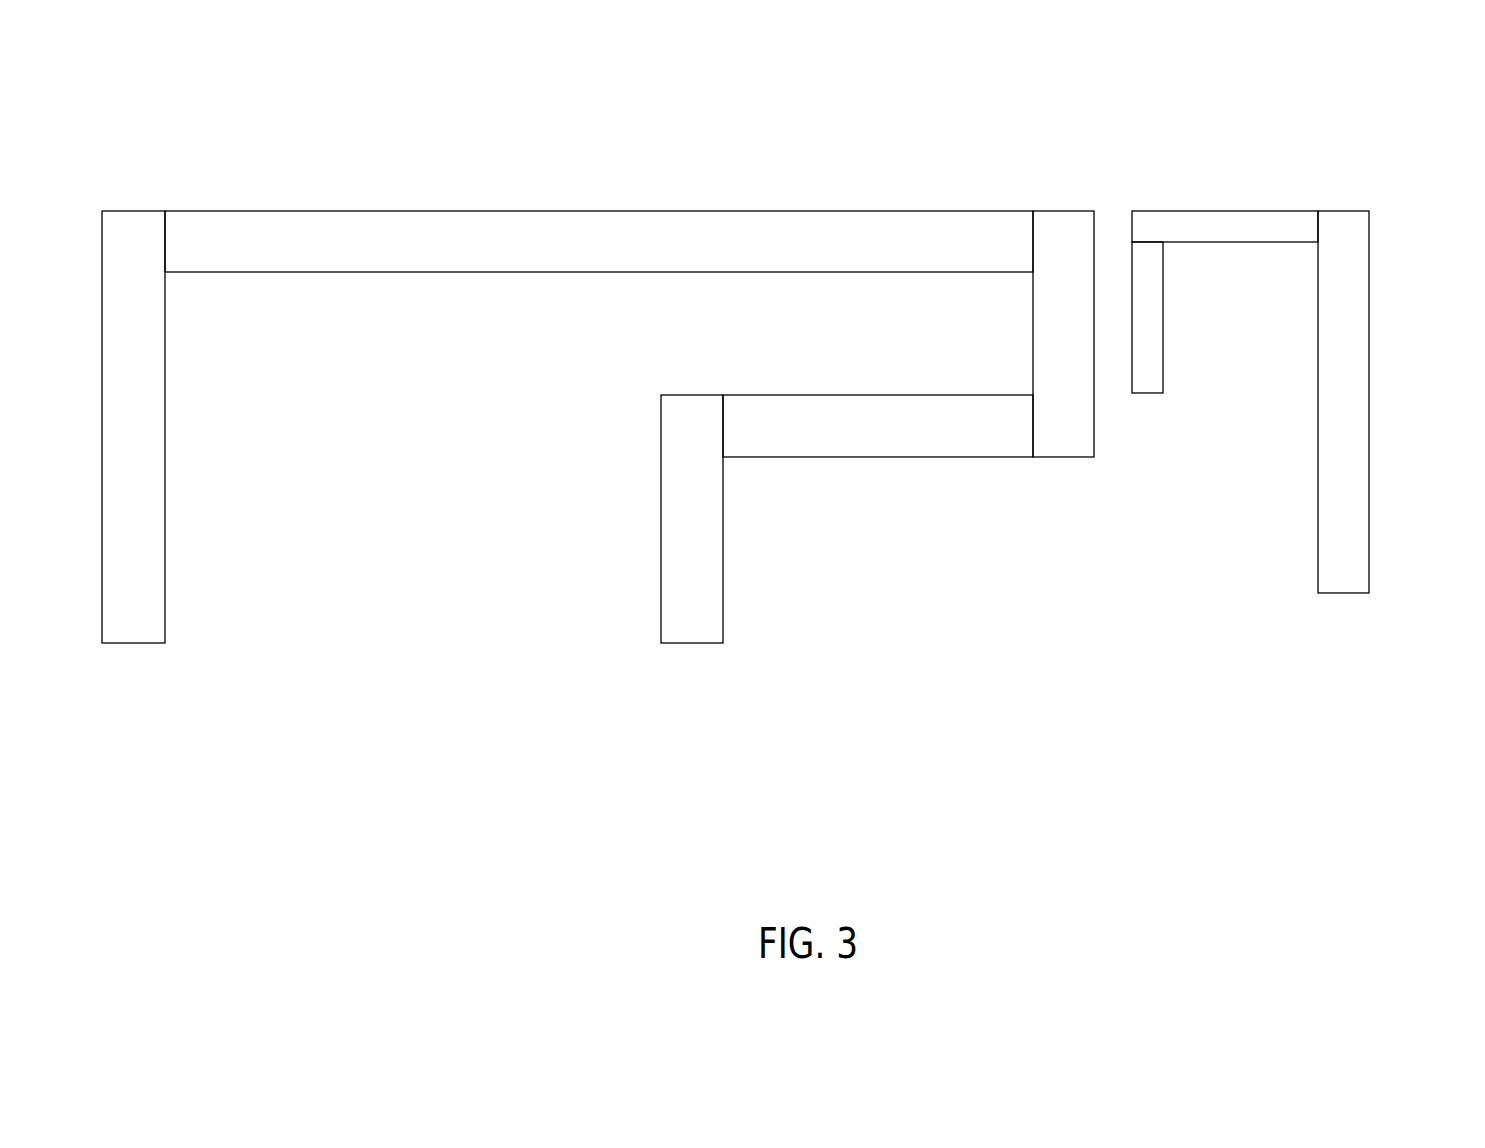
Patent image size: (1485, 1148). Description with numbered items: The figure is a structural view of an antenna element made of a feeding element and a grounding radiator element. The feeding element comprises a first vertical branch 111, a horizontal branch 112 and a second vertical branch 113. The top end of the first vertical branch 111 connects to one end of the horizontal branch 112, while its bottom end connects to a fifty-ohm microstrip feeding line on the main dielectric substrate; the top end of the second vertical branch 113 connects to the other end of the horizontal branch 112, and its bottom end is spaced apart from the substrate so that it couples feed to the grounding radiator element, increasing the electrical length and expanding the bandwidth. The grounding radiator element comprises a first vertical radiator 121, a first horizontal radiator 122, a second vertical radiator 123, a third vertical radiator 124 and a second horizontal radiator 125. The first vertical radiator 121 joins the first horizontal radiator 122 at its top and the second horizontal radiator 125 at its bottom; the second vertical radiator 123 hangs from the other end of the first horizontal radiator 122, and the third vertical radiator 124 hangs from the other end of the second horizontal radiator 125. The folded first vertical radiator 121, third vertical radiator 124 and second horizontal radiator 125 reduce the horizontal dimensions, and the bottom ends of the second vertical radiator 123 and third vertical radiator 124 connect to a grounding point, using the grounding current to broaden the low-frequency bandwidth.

The first vertical branch 111 is at (1342, 225).
The horizontal branch 112 is at (1217, 224).
The second vertical branch 113 is at (1135, 397).
The first vertical radiator 121 is at (1057, 223).
The first horizontal radiator 122 is at (576, 223).
The second vertical radiator 123 is at (122, 224).
The third vertical radiator 124 is at (696, 635).
The second horizontal radiator 125 is at (857, 423).